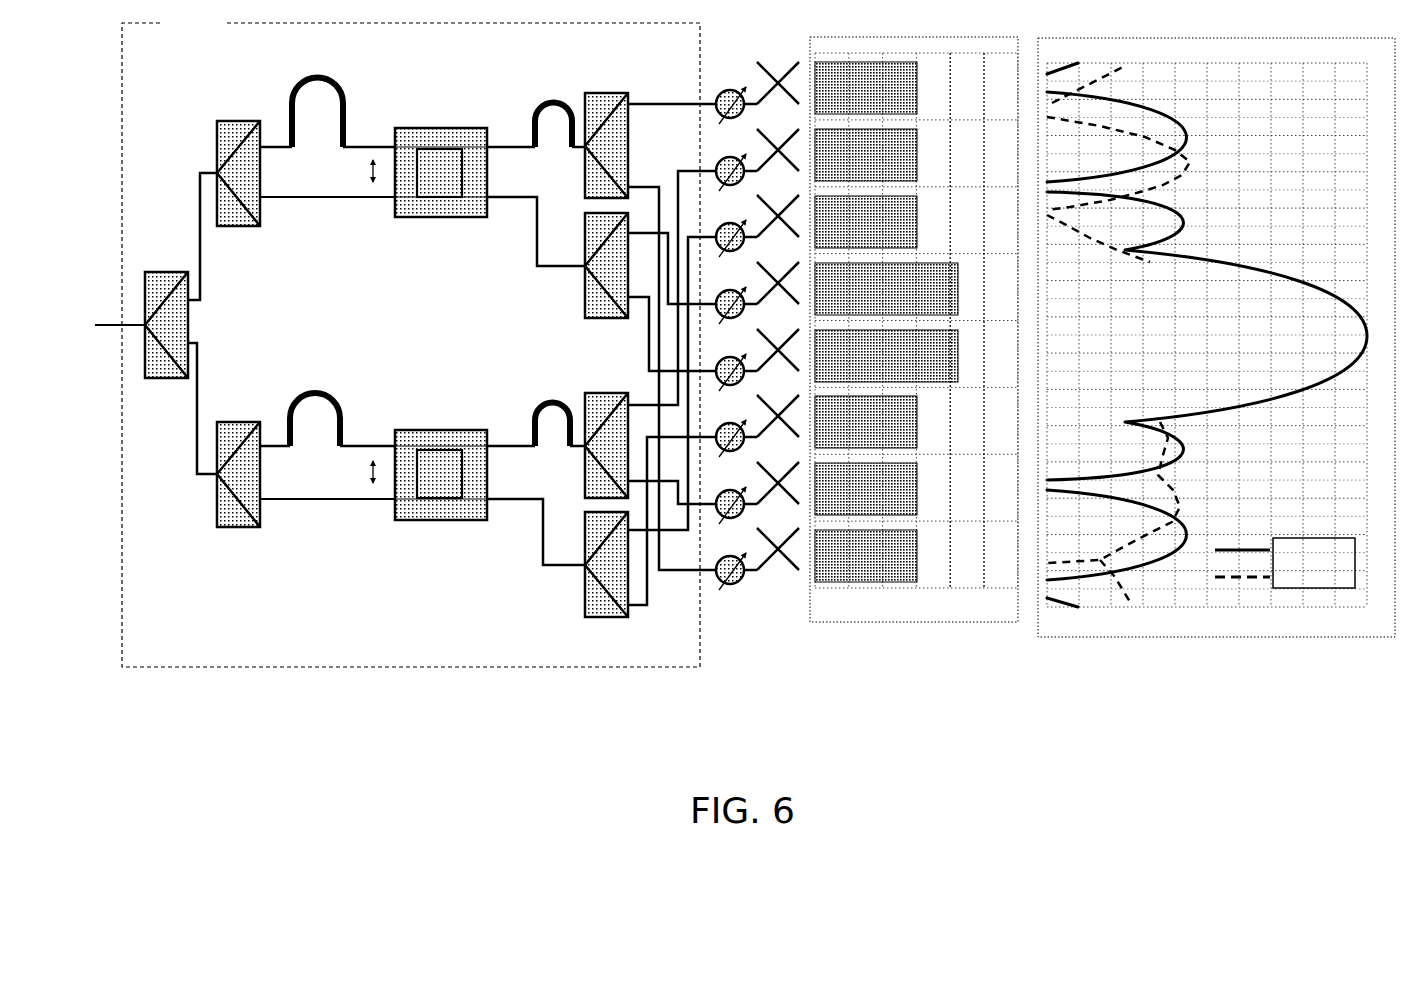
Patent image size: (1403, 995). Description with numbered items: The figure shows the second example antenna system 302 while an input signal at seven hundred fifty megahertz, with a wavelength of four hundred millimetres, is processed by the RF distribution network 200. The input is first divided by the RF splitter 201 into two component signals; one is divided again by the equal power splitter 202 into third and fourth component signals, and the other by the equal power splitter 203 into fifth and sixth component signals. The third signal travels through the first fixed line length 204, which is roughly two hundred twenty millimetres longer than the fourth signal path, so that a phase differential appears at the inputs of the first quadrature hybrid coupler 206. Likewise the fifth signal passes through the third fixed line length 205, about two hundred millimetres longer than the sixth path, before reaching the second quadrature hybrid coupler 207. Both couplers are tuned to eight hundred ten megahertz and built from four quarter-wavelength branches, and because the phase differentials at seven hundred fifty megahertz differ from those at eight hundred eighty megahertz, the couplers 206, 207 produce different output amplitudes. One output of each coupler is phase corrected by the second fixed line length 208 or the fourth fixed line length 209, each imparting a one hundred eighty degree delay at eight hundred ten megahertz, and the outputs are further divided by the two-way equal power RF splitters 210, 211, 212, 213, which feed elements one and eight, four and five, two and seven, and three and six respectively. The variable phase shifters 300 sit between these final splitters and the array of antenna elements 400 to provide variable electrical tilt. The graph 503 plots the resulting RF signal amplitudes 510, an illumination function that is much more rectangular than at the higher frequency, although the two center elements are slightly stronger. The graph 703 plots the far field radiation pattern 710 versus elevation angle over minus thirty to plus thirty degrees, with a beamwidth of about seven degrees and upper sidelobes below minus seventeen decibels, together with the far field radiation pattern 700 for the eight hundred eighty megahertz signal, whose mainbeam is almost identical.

The RF distribution network 200 is at (411, 339).
The RF splitter 201 is at (153, 266).
The equal power splitter 202 is at (206, 164).
The equal power splitter 203 is at (209, 514).
The first fixed line length 204 is at (346, 93).
The third fixed line length 205 is at (343, 407).
The first quadrature hybrid coupler 206 is at (437, 234).
The second quadrature hybrid coupler 207 is at (429, 534).
The second fixed line length 208 is at (545, 98).
The fourth fixed line length 209 is at (549, 397).
The two-way equal power RF splitter 210 is at (650, 317).
The two-way equal power RF splitter 211 is at (650, 292).
The two-way equal power RF splitter 212 is at (650, 337).
The two-way equal power RF splitter 213 is at (650, 441).
The variable phase shifters 300 is at (738, 594).
The antenna elements 400 is at (775, 56).
The RF signal amplitudes 510 is at (890, 56).
The far field radiation pattern 700 is at (1125, 70).
The far field radiation pattern 710 is at (1192, 128).
The second example antenna system 302 is at (393, 743).
The graph 503 is at (940, 718).
The graph 703 is at (1262, 725).